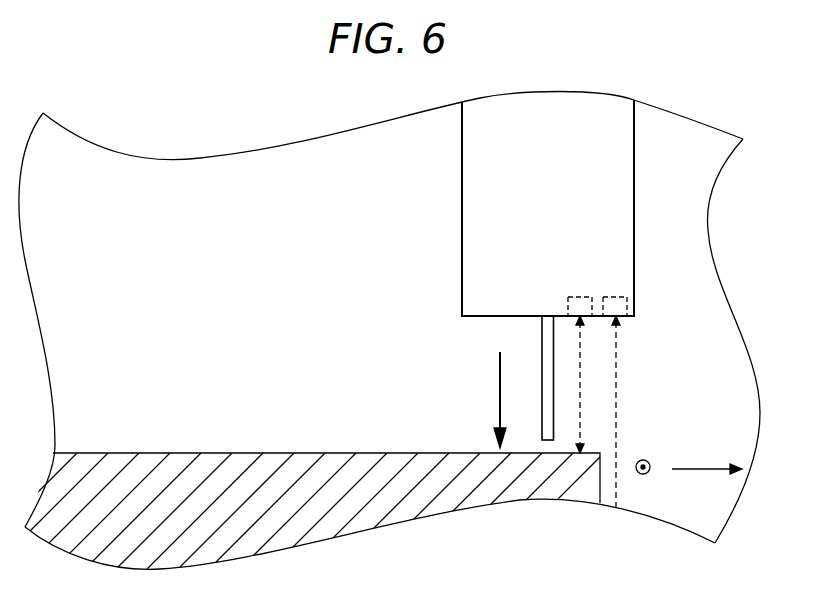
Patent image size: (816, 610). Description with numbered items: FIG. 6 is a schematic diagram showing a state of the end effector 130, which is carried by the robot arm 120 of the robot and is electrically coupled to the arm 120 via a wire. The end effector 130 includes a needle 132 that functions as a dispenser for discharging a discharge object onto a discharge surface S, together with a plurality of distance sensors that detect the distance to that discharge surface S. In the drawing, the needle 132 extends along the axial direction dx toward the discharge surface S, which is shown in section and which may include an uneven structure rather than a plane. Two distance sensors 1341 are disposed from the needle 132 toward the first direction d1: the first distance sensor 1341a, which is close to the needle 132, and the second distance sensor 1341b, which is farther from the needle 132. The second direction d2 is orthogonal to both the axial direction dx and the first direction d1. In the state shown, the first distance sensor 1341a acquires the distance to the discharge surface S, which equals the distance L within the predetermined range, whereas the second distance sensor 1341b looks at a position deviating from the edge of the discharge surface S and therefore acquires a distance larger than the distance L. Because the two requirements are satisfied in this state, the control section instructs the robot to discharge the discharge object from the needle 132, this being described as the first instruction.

The robot arm 120 is at (176, 216).
The end effector 130 is at (291, 250).
The distance sensors disposed toward the first direction 1341 is at (365, 228).
The first distance sensor 1341a is at (568, 297).
The second distance sensor 1341b is at (613, 296).
The needle 132 is at (542, 343).
The discharge surface S is at (187, 453).
The axial direction dx is at (499, 408).
The first direction d1 is at (697, 469).
The second direction d2 is at (647, 459).